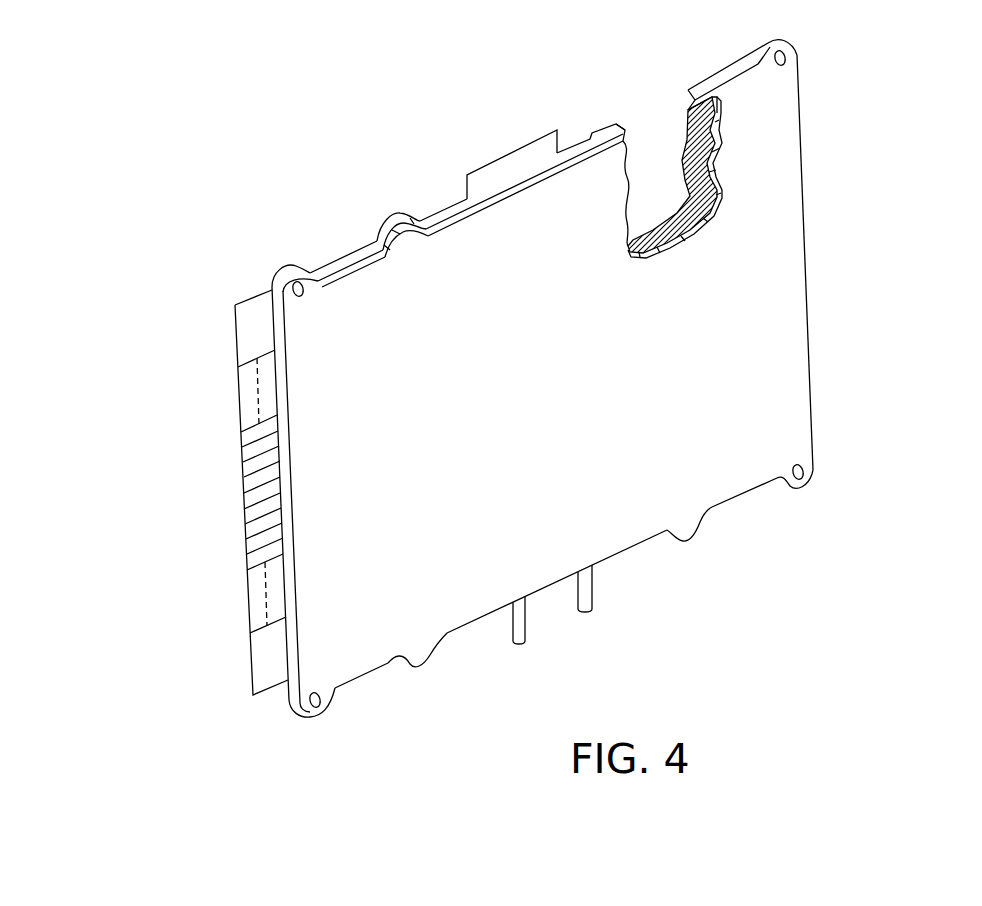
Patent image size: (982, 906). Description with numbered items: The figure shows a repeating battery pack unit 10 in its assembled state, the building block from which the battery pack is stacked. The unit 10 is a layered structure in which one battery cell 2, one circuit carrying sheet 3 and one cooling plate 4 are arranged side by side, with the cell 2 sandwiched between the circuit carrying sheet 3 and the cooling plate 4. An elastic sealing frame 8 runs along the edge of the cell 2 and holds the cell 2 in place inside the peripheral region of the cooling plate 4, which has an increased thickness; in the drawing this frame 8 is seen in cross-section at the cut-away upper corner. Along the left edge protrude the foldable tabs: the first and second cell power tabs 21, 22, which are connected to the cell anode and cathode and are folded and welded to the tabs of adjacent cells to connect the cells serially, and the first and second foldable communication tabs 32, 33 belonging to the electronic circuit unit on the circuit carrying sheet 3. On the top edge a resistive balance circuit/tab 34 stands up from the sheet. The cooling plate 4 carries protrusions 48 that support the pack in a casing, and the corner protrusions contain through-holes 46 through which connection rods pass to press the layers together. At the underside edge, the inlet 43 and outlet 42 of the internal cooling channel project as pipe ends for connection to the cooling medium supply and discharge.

The repeating battery pack unit 10 is at (888, 214).
The cooling plate 4 is at (701, 420).
The through-holes 46 is at (280, 270).
The protrusions 48 is at (396, 218).
The resistive balance circuit/tab 34 is at (503, 172).
The battery cell 2 is at (697, 138).
The circuit carrying sheet 3 is at (695, 100).
The elastic sealing frame 8 is at (702, 130).
The second foldable cell power tab 22 is at (247, 405).
The second foldable communication tab 33 is at (246, 468).
The first foldable communication tab 32 is at (247, 542).
The first foldable cell power tab 21 is at (253, 603).
The outlet 42 is at (523, 627).
The inlet 43 is at (590, 597).